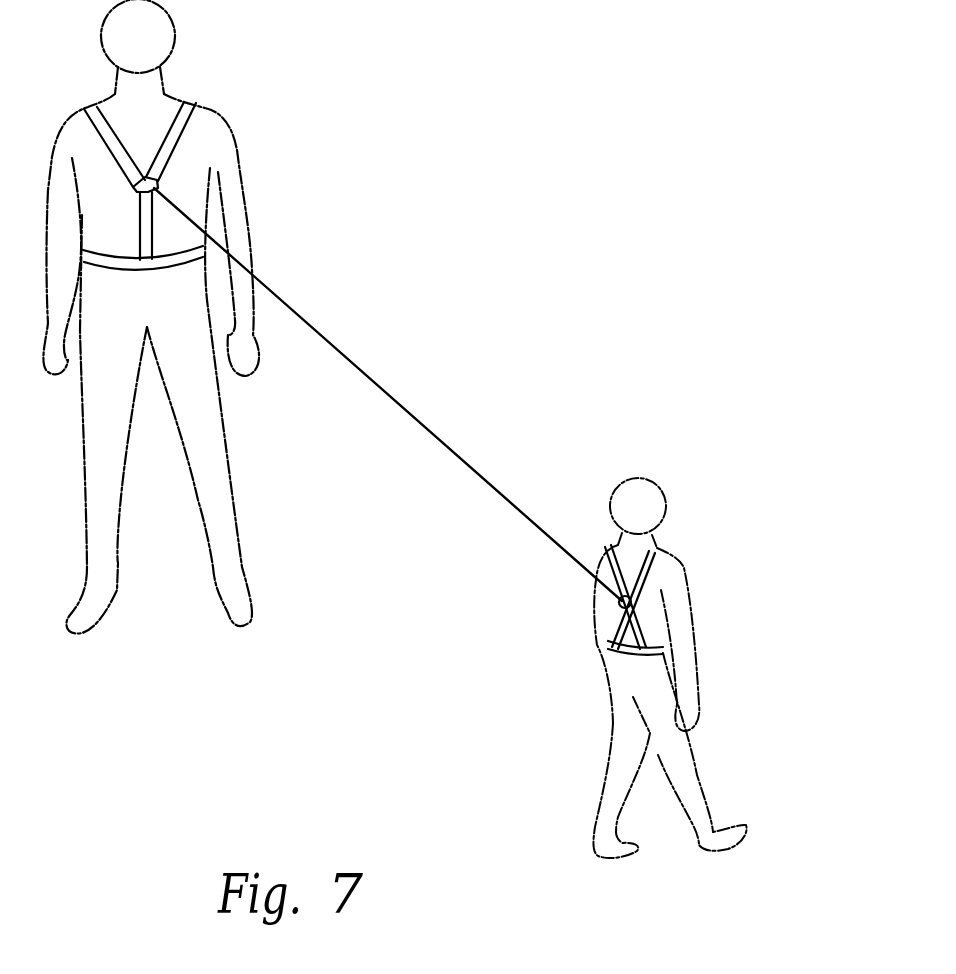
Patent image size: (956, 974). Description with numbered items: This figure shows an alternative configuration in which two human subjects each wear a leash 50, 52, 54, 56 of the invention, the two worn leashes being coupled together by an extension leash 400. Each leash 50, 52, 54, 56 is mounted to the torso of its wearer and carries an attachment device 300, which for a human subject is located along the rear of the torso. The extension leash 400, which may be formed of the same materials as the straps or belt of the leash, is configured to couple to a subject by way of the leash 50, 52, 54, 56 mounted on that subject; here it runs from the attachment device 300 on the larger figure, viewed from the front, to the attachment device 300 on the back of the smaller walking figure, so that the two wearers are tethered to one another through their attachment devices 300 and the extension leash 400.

The leash 50 is at (203, 92).
The leash 52 is at (433, 347).
The leash 54 is at (487, 347).
The leash 56 is at (474, 350).
The attachment device 300 is at (158, 186).
The extension leash 400 is at (384, 384).